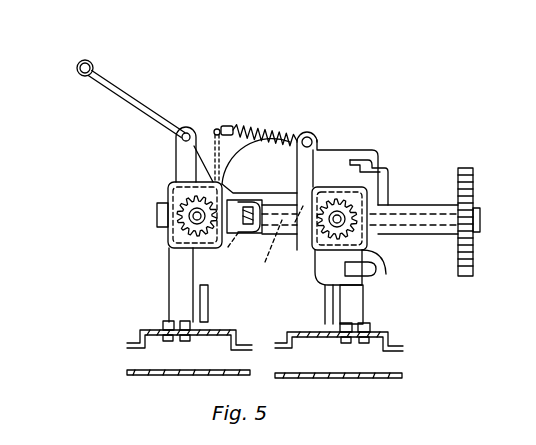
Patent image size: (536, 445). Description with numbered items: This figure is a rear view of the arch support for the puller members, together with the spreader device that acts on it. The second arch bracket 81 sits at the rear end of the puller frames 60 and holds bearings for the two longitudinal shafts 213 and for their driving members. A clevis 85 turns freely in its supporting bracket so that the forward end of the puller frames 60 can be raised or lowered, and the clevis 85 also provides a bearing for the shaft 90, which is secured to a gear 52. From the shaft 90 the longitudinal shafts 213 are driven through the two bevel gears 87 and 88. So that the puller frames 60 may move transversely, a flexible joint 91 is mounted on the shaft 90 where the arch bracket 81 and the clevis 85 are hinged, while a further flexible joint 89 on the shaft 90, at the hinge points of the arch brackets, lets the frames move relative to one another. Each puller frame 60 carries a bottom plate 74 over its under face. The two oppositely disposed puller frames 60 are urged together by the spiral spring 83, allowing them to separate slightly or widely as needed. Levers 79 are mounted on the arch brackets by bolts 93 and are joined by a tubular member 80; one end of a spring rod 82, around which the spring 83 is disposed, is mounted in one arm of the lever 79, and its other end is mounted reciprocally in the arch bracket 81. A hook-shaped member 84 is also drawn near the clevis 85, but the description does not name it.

The gear 52 is at (472, 172).
The puller frames 60 is at (138, 338).
The bottom plate 74 is at (158, 372).
The lever 79 is at (118, 91).
The tubular member 80 is at (92, 65).
The second arch bracket 81 is at (176, 306).
The spring rod 82 is at (233, 126).
The spiral spring 83 is at (254, 130).
The hook bracket 84 is at (362, 152).
The clevis 85 is at (420, 235).
The bevel gear 87 is at (166, 226).
The bevel gear 88 is at (314, 182).
The flexible joint 89 is at (238, 234).
The shaft 90 is at (265, 244).
The flexible joint 91 is at (377, 250).
The bolts 93 is at (181, 138).
The longitudinal shafts 213 is at (185, 206).